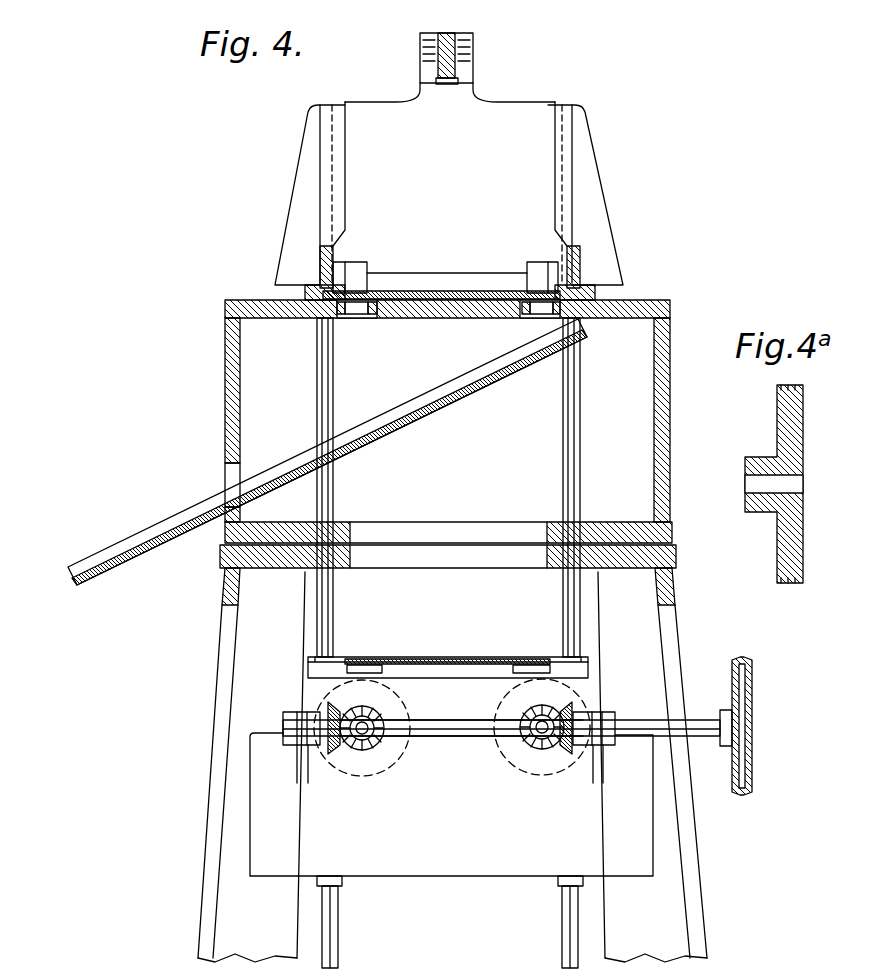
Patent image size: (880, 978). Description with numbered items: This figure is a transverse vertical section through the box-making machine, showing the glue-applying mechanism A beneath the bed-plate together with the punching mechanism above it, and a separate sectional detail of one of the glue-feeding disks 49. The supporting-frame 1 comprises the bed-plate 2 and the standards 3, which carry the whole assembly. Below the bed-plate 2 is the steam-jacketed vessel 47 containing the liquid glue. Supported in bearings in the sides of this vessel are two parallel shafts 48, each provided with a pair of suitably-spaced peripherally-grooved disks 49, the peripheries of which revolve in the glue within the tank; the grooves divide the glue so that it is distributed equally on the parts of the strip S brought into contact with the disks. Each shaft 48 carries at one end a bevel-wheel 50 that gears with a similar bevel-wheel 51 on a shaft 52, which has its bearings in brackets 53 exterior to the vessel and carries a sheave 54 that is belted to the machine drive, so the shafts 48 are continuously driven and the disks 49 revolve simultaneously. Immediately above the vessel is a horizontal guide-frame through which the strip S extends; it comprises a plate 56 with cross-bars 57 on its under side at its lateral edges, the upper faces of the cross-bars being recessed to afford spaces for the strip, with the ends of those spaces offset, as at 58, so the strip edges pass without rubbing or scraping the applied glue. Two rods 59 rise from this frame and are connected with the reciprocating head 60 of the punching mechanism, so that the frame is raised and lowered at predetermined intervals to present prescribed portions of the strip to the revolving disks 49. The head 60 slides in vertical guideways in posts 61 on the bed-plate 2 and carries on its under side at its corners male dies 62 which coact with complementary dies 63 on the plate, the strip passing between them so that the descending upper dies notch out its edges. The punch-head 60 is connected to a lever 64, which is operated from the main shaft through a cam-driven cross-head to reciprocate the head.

In FIG. 4, the supporting-frame 1 is at (465, 412).
In FIG. 4, the bed-plate 2 is at (640, 298).
In FIG. 4, the standards 3 is at (204, 916).
In FIG. 4, the steam-jacketed vessel 47 is at (451, 850).
In FIG. 4, the parallel shafts 48 is at (378, 728).
In FIG. 4, the peripherally-grooved disks 49 is at (327, 700).
In FIG. 4A, the peripherally-grooved disks 49 is at (790, 545).
In FIG. 4, the bevel-wheel 50 is at (373, 748).
In FIG. 4, the bevel-wheel 51 is at (333, 758).
In FIG. 4, the shaft 52 is at (444, 737).
In FIG. 4, the brackets 53 is at (292, 718).
In FIG. 4, the sheave 54 is at (754, 775).
In FIG. 4, the plate 56 is at (450, 660).
In FIG. 4, the cross-bars 57 is at (585, 669).
In FIG. 4, the offset ends 58 is at (368, 667).
In FIG. 4, the rods 59 is at (318, 388).
In FIG. 4, the reciprocating head 60 is at (450, 191).
In FIG. 4, the posts 61 is at (300, 196).
In FIG. 4, the male dies 62 is at (355, 282).
In FIG. 4, the complementary dies 63 is at (357, 316).
In FIG. 4, the lever 64 is at (458, 58).
In FIG. 4, the strip S is at (448, 290).
In FIG. 4, the glue-applying mechanism A is at (447, 800).